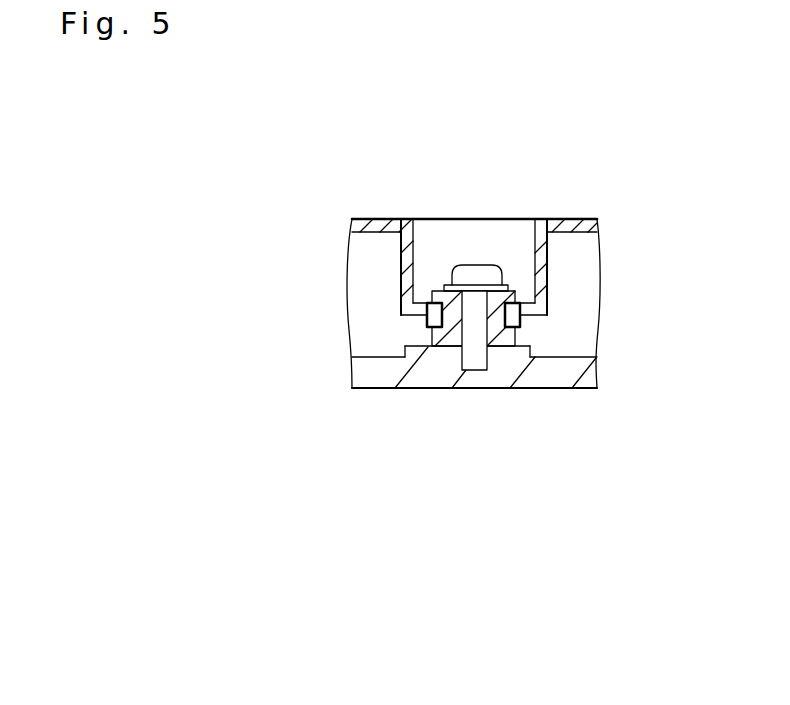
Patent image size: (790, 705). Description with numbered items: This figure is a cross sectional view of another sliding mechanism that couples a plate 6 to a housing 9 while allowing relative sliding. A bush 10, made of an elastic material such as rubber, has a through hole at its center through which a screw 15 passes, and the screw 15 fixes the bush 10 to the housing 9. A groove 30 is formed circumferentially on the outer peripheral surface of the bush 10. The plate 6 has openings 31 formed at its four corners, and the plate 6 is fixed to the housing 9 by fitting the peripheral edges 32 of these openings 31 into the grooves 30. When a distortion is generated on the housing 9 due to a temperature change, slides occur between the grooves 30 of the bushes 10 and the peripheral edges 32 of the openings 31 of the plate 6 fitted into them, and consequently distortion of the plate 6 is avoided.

The plate 6 is at (381, 218).
The opening 31 is at (430, 231).
The groove 30 is at (512, 298).
The screw 15 is at (476, 271).
The peripheral edge 32 is at (434, 326).
The bush 10 is at (502, 340).
The housing 9 is at (560, 375).